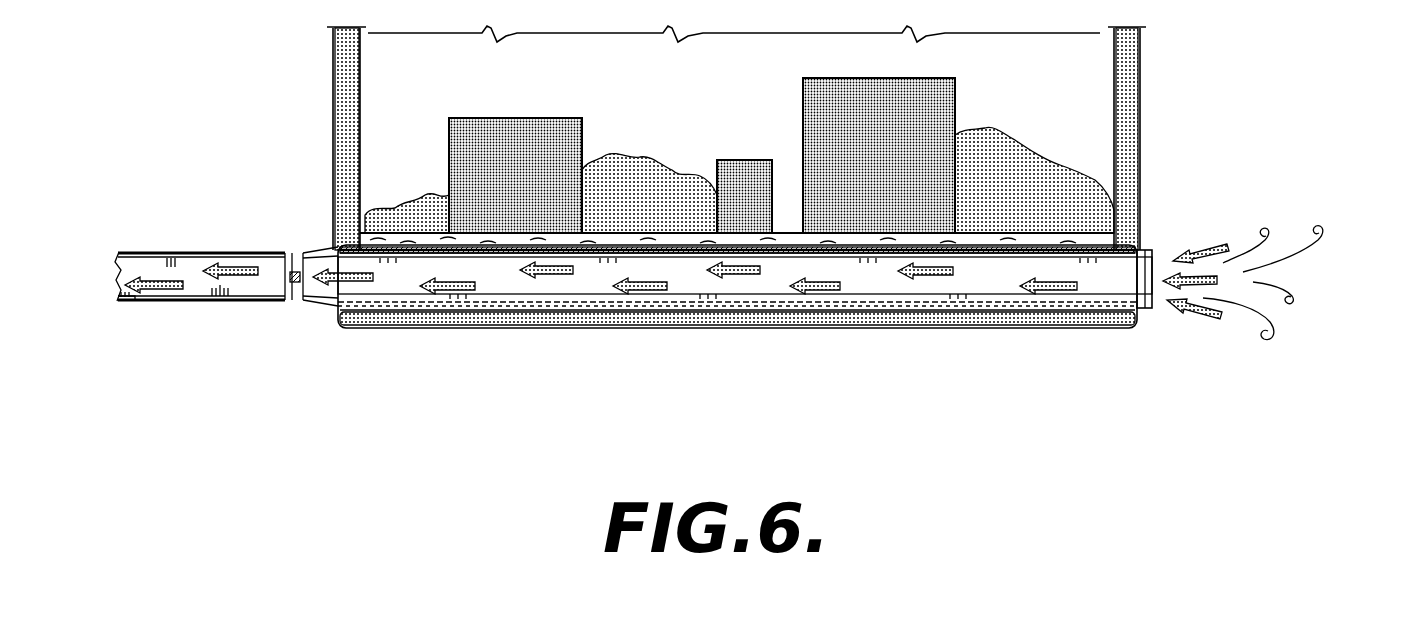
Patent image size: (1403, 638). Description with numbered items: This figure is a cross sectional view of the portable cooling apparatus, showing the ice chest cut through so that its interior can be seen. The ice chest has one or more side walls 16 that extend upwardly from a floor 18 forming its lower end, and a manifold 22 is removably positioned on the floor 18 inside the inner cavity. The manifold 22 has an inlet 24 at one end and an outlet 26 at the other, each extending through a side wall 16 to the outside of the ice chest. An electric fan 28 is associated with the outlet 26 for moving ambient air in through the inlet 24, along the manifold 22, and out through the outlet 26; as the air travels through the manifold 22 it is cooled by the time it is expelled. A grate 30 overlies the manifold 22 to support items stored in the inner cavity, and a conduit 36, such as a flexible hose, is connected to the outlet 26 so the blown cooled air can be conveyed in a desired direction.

The side wall 16 is at (1130, 78).
The floor 18 is at (537, 318).
The manifold 22 is at (870, 280).
The inlet 24 is at (1283, 271).
The outlet 26 is at (148, 275).
The electric fan 28 is at (295, 253).
The grate 30 is at (680, 255).
The conduit 36 is at (118, 301).